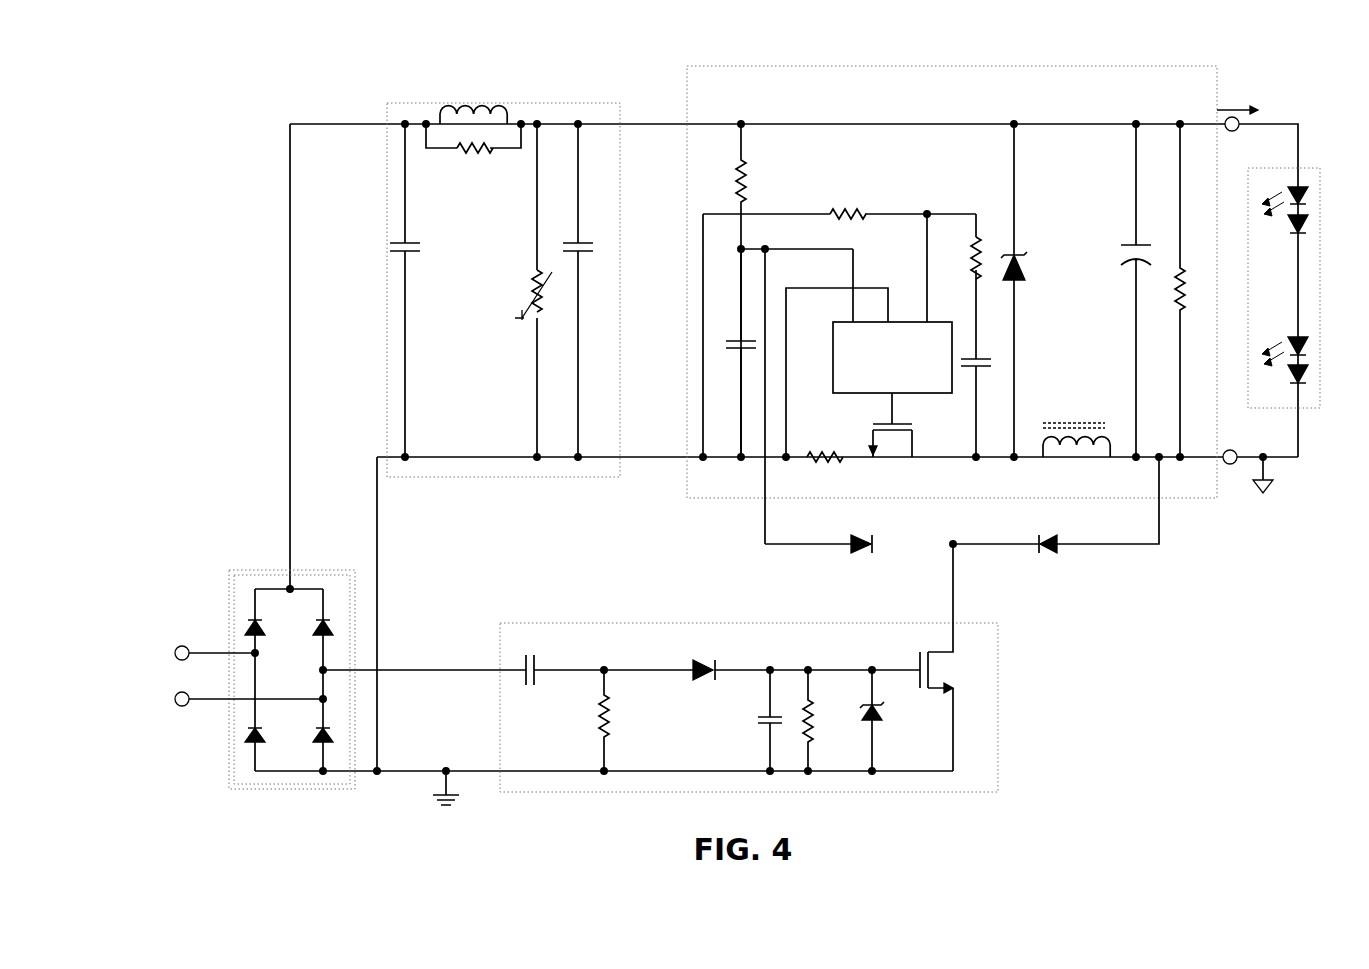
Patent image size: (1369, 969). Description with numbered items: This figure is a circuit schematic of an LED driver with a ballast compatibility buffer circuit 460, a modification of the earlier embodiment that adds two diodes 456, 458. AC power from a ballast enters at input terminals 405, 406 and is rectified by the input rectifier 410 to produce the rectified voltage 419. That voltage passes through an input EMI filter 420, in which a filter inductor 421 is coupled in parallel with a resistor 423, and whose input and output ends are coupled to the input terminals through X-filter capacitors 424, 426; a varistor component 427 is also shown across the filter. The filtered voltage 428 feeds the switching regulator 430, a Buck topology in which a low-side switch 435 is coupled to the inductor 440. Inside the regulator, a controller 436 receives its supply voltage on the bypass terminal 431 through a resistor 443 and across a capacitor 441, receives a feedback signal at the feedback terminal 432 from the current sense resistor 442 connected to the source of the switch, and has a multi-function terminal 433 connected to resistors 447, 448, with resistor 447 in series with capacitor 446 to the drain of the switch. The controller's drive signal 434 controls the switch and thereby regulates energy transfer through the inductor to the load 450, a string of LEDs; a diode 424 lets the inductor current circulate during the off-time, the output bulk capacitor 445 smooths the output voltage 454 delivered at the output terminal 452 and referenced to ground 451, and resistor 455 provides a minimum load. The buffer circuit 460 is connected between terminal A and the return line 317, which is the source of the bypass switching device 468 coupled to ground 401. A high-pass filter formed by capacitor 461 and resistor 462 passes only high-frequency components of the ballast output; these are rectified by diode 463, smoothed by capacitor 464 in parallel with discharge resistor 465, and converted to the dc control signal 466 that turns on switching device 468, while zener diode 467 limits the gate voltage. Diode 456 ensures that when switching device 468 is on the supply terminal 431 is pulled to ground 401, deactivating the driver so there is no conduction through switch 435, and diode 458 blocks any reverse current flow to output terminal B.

The return line 317 is at (404, 770).
The ground 401 is at (440, 800).
The input terminal 405 is at (194, 648).
The input terminal 406 is at (196, 694).
The input rectifier 410 is at (268, 570).
The rectified voltage Vrect 419 is at (295, 98).
The input EMI filter 420 is at (546, 104).
The filter inductor 421 is at (492, 108).
The resistor 423 is at (462, 135).
The X-filter capacitor 424 is at (410, 238).
The X-filter capacitor 426 is at (584, 240).
The varistor RV 427 is at (522, 296).
The filtered voltage Vin 428 is at (640, 120).
The switching regulator 430 is at (880, 66).
The bypass (BP) terminal 431 is at (826, 326).
The feedback (FB) controller terminal 432 is at (890, 290).
The multi-function (M) controller terminal 433 is at (930, 292).
The drive signal 434 is at (880, 422).
The switch SW 435 is at (892, 460).
The controller 436 is at (846, 370).
The inductor L1 440 is at (1080, 400).
The capacitor 441 is at (736, 340).
The current sense resistor Rsns 442 is at (824, 462).
The resistor 443 is at (748, 178).
The output bulk capacitor Co 445 is at (1142, 246).
The capacitor 446 is at (974, 370).
The resistor 447 is at (978, 240).
The resistor 448 is at (846, 210).
The load 450 is at (1308, 166).
The output ground 451 is at (1258, 496).
The output current terminal Io 452 is at (1230, 86).
The output voltage Vo 454 is at (1276, 92).
The resistor 455 is at (1186, 280).
The diode 456 is at (848, 548).
The diode 458 is at (1052, 548).
The ballast compatibility buffer circuit 460 is at (612, 624).
The capacitor 461 is at (540, 666).
The resistor 462 is at (596, 714).
The diode 463 is at (702, 682).
The capacitor 464 is at (760, 722).
The discharge resistor 465 is at (816, 716).
The control signal 466 is at (912, 668).
The zener diode 467 is at (886, 716).
The bypass switching device 468 is at (950, 672).